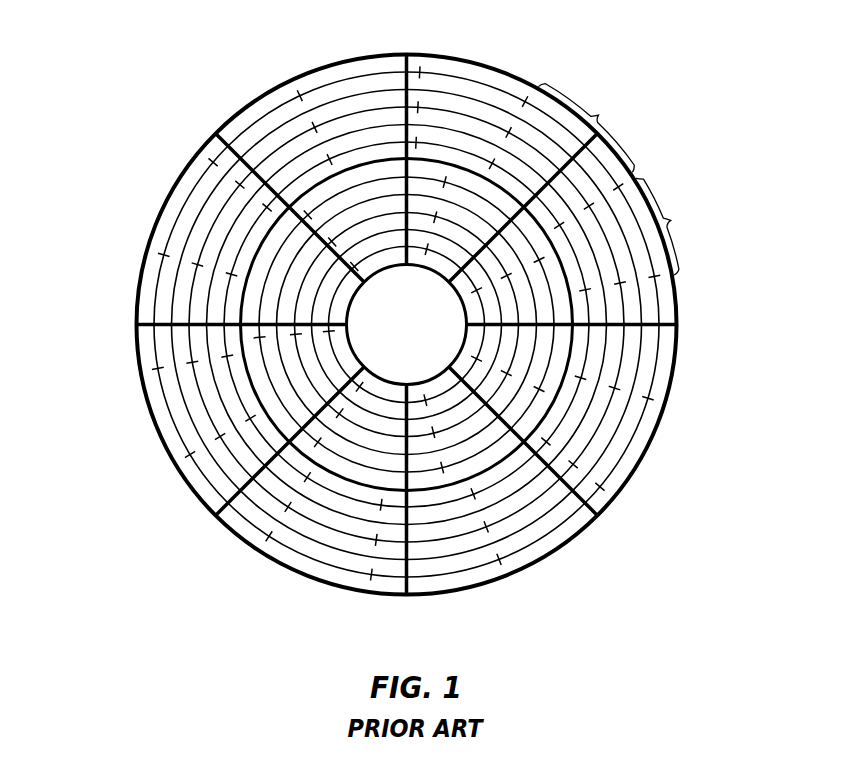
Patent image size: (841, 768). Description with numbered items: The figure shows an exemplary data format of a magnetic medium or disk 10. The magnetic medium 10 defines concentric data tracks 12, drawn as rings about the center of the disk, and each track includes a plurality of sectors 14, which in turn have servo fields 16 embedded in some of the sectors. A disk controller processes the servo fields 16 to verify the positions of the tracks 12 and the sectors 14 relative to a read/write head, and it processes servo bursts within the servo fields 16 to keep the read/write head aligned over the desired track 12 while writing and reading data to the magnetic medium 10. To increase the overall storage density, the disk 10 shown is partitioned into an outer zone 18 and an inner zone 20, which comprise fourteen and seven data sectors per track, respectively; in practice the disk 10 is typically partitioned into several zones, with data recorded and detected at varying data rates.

The magnetic medium or disk 10 is at (713, 62).
The data tracks 12 is at (662, 356).
The sectors 14 is at (620, 179).
The servo fields 16 is at (405, 82).
The outer zone 18 is at (187, 237).
The inner zone 20 is at (281, 367).